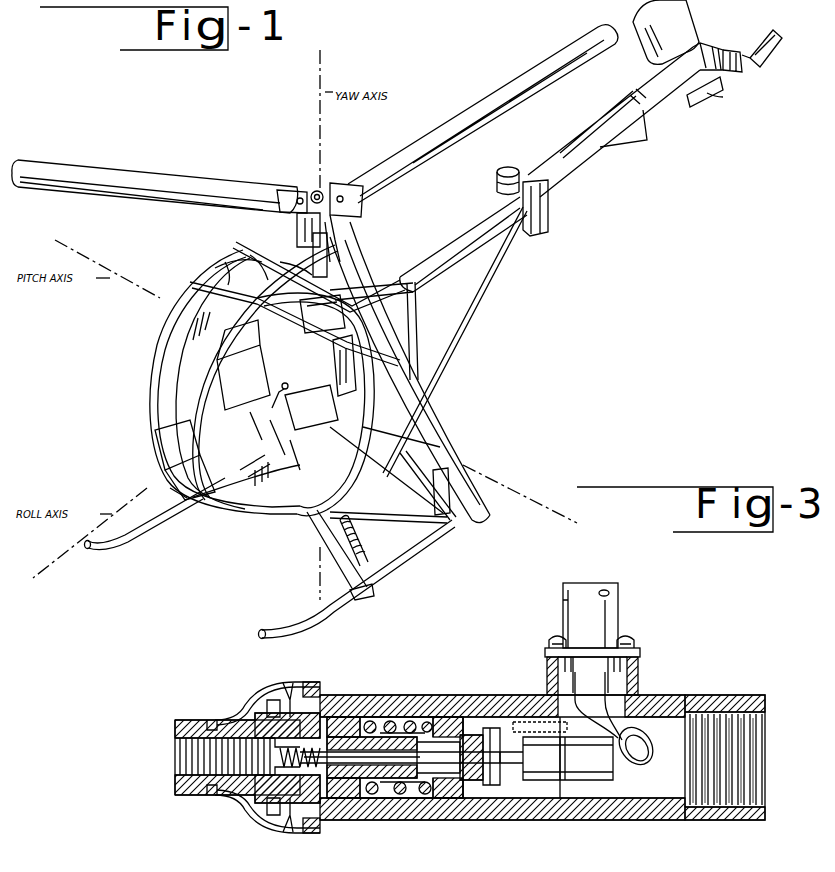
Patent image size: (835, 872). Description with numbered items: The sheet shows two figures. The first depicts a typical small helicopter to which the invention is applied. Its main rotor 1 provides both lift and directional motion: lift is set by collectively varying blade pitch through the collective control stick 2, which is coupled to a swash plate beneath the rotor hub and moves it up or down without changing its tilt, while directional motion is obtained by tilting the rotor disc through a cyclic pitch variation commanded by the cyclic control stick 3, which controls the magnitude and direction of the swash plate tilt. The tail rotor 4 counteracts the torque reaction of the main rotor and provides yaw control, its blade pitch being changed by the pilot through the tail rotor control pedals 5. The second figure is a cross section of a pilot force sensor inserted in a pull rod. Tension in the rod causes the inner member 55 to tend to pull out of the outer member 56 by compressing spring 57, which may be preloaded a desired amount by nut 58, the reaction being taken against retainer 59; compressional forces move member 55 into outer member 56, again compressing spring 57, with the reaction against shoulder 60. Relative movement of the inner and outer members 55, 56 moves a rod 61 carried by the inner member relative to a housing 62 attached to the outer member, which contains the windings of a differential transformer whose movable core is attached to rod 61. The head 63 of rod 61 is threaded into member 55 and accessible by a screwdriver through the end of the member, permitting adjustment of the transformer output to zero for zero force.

In FIG. 1, the main rotor 1 is at (480, 112).
In FIG. 1, the collective control stick 2 is at (330, 444).
In FIG. 1, the cyclic control stick 3 is at (273, 407).
In FIG. 1, the tail rotor 4 is at (752, 47).
In FIG. 1, the tail rotor control pedals 5 is at (262, 464).
In FIG. 3, the inner member 55 is at (194, 800).
In FIG. 3, the outer member 56 is at (503, 712).
In FIG. 3, the spring 57 is at (407, 716).
In FIG. 3, the nut 58 is at (468, 818).
In FIG. 3, the retainer 59 is at (318, 708).
In FIG. 3, the shoulder 60 is at (480, 712).
In FIG. 3, the rod 61 is at (503, 762).
In FIG. 3, the housing 62 is at (600, 776).
In FIG. 3, the head 63 is at (314, 765).